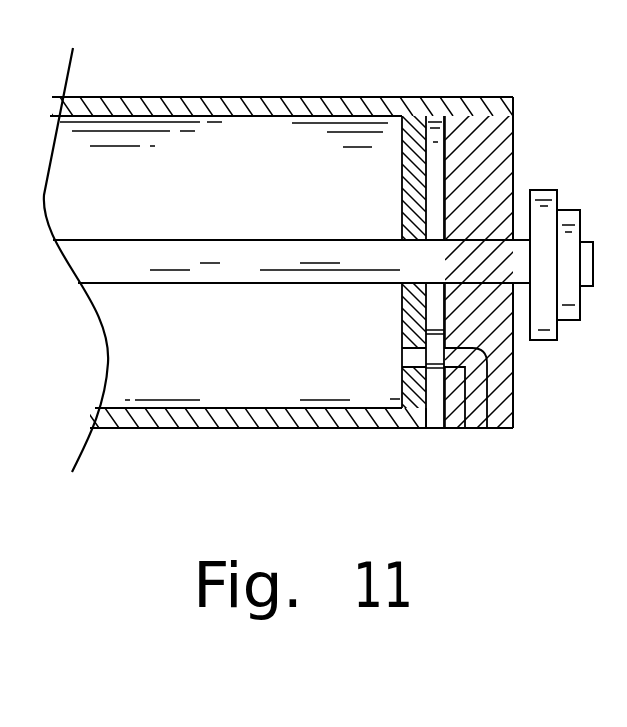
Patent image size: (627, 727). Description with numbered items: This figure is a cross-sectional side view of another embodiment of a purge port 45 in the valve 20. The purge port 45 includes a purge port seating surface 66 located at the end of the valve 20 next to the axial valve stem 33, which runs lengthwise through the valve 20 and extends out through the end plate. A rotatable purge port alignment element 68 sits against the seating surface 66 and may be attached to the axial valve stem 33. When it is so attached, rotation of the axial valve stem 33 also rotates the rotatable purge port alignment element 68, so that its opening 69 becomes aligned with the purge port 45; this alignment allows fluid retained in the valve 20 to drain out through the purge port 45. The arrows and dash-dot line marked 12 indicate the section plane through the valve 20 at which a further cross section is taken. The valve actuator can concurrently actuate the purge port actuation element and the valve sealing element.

The valve 20 is at (140, 95).
The axial valve stem 33 is at (153, 240).
The rotatable purge port alignment element 68 is at (400, 305).
The purge port seating surface 66 is at (434, 386).
The purge port 45 is at (484, 364).
The opening 69 is at (402, 352).
The section line 12 is at (280, 393).